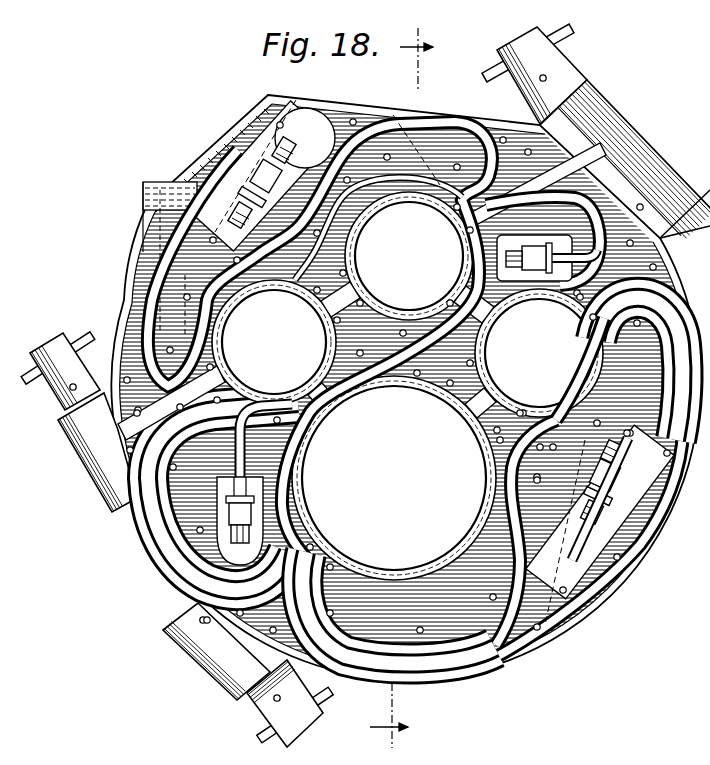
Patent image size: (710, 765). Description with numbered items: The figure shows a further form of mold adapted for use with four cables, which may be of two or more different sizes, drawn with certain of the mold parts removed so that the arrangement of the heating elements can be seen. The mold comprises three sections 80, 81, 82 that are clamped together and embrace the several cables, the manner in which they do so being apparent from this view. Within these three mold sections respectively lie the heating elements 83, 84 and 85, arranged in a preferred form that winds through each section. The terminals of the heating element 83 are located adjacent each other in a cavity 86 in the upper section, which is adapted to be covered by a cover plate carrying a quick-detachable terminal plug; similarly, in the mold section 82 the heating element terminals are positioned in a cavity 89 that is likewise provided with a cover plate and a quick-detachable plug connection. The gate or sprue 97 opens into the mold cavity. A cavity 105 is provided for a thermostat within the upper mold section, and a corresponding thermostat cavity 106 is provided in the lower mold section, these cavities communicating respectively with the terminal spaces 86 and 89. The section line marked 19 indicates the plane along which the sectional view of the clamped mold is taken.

The mold section 80 is at (142, 271).
The mold section 81 is at (150, 549).
The mold section 82 is at (440, 680).
The heating element 83 is at (126, 315).
The heating element 84 is at (540, 203).
The heating element 85 is at (353, 652).
The cavity 86 is at (257, 137).
The cavity 89 is at (648, 508).
The gate or sprue 97 is at (322, 104).
The thermostat cavity 105 is at (173, 183).
The thermostat cavity 106 is at (574, 607).
The section line 19 is at (401, 387).